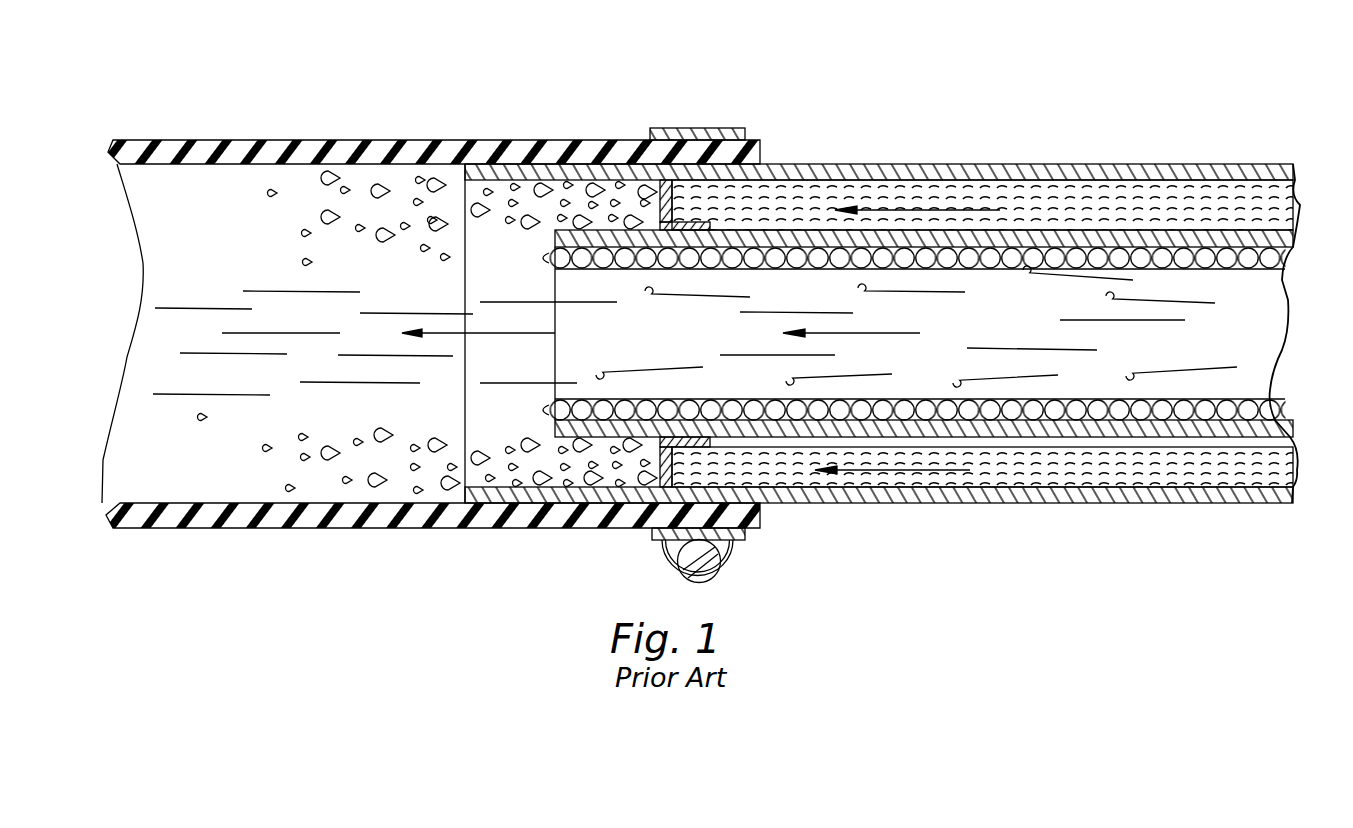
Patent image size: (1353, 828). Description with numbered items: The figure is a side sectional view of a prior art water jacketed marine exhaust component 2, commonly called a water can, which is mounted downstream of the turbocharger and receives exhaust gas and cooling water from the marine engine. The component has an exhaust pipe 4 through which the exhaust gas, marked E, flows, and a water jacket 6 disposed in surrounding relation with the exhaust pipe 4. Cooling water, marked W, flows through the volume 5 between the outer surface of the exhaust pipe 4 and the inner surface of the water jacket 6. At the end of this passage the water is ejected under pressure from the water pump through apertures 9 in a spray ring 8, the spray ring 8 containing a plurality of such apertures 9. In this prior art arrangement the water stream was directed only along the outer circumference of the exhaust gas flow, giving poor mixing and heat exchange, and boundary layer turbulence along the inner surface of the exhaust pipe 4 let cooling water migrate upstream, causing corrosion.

The water jacketed exhaust component 2 is at (901, 320).
The exhaust pipe 4 is at (1062, 230).
The volume 5 is at (1280, 200).
The water jacket 6 is at (1143, 163).
The spray ring 8 is at (703, 226).
The apertures 9 is at (657, 192).